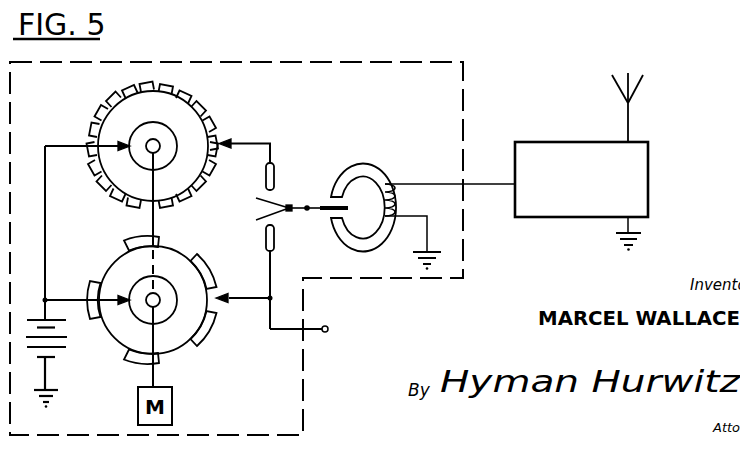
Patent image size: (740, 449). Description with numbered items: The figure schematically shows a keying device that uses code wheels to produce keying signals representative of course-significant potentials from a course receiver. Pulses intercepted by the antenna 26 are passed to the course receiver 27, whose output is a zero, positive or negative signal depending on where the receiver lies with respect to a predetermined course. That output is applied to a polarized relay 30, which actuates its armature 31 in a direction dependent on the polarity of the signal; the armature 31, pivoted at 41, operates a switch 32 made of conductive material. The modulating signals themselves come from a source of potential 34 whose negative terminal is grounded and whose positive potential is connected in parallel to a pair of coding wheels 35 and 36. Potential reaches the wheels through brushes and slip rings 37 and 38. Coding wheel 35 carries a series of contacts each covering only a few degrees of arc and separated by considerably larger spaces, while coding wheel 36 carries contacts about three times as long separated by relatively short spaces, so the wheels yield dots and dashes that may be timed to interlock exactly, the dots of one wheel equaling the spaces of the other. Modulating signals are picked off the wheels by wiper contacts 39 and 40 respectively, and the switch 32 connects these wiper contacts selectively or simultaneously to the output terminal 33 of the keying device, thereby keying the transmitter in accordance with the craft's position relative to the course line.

The antenna 26 is at (638, 84).
The course receiver 27 is at (650, 157).
The polarized relay 30 is at (375, 170).
The armature 31 is at (320, 213).
The switch 32 is at (276, 197).
The output terminal 33 is at (328, 327).
The source of potential 34 is at (57, 352).
The coding wheel 35 is at (104, 115).
The coding wheel 36 is at (110, 262).
The brush and slip ring 37 is at (165, 136).
The brush and slip ring 38 is at (157, 284).
The wiper contact 39 is at (233, 143).
The wiper contact 40 is at (231, 273).
The pivot 41 is at (308, 205).